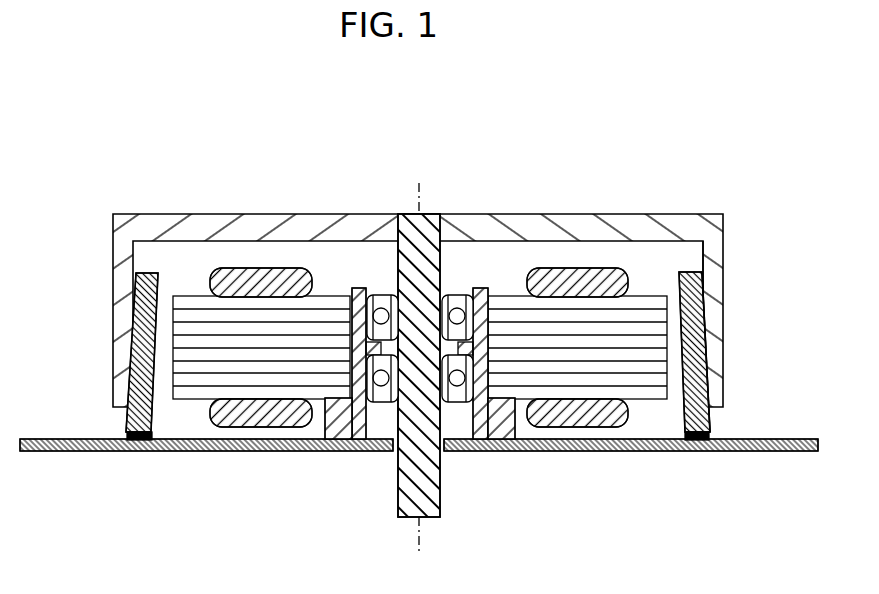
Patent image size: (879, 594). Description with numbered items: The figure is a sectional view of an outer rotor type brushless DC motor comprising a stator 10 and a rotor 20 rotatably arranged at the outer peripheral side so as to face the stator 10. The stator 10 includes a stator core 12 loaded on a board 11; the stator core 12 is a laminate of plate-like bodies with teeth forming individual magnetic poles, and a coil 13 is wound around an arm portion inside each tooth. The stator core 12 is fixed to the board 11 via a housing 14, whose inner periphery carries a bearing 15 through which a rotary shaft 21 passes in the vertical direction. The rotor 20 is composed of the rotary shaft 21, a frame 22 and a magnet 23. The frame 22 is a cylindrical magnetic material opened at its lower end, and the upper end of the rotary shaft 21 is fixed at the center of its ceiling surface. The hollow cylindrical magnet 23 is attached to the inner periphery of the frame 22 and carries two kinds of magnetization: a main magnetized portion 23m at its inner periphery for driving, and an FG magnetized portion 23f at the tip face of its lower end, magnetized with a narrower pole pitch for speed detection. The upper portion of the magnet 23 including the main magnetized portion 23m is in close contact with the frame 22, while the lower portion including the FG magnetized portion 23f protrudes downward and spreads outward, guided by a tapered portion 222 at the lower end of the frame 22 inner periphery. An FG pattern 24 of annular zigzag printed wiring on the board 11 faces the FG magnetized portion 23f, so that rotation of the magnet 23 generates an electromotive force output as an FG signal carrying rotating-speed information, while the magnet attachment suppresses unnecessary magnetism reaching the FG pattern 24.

The stator 10 is at (642, 290).
The board 11 is at (787, 451).
The stator core 12 is at (533, 367).
The coil 13 is at (550, 272).
The housing 14 is at (490, 434).
The bearing 15 is at (455, 297).
The rotor 20 is at (365, 215).
The rotary shaft 21 is at (400, 495).
The frame 22 is at (673, 228).
The tapered portion 222 is at (707, 392).
The magnet 23 is at (705, 342).
The main magnetized portion 23m is at (703, 318).
The FG magnetized portion 23f is at (710, 422).
The FG pattern 24 is at (707, 451).